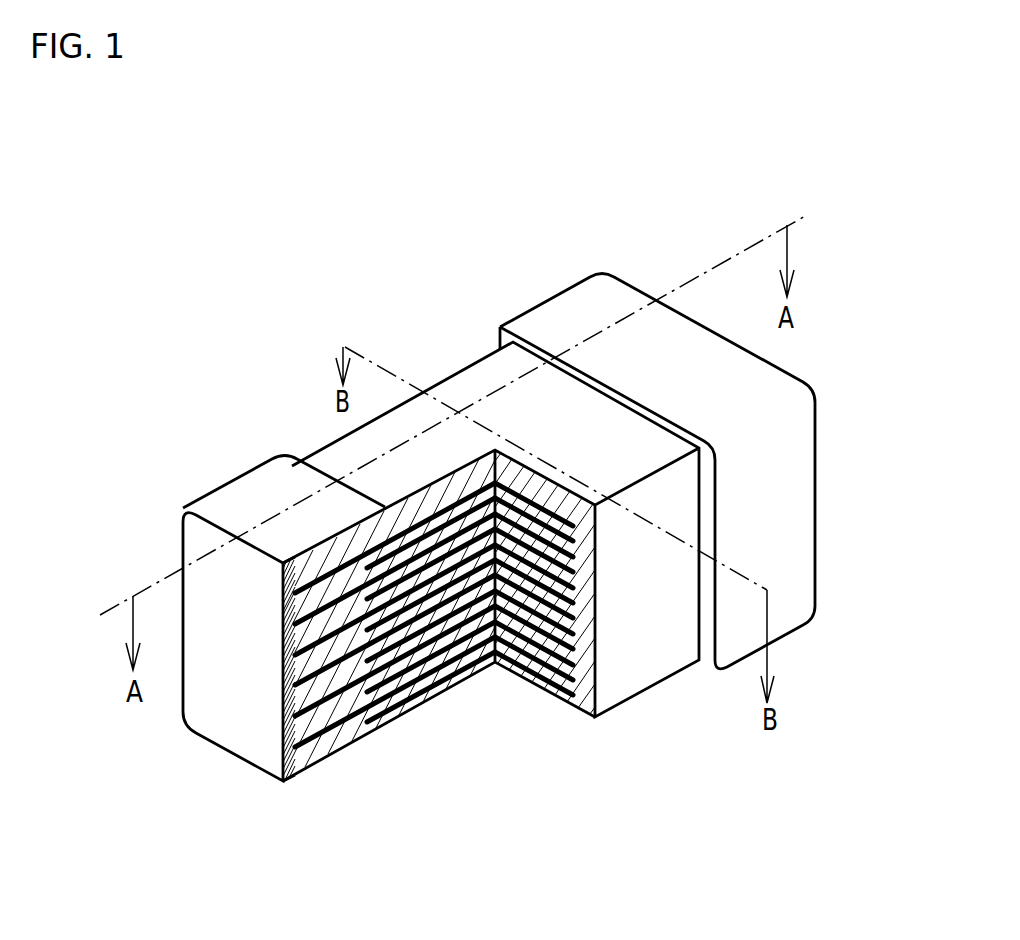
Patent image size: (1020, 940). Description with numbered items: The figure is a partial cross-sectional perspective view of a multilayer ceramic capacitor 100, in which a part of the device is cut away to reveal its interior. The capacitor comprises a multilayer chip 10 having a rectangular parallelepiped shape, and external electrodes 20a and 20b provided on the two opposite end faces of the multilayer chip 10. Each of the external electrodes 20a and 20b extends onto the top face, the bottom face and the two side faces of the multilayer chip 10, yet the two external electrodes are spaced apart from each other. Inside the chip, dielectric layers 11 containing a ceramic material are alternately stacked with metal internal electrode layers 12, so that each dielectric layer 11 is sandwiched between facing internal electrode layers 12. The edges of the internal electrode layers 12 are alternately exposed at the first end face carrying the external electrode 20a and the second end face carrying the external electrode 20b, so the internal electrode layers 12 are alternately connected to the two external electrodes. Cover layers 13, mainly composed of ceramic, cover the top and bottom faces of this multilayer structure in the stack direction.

The multilayer ceramic capacitor 100 is at (918, 200).
The multilayer chip 10 is at (330, 440).
The dielectric layer 11 is at (422, 653).
The internal electrode layer 12 is at (483, 668).
The cover layer 13 is at (462, 385).
The external electrode 20a is at (210, 486).
The external electrode 20b is at (553, 312).